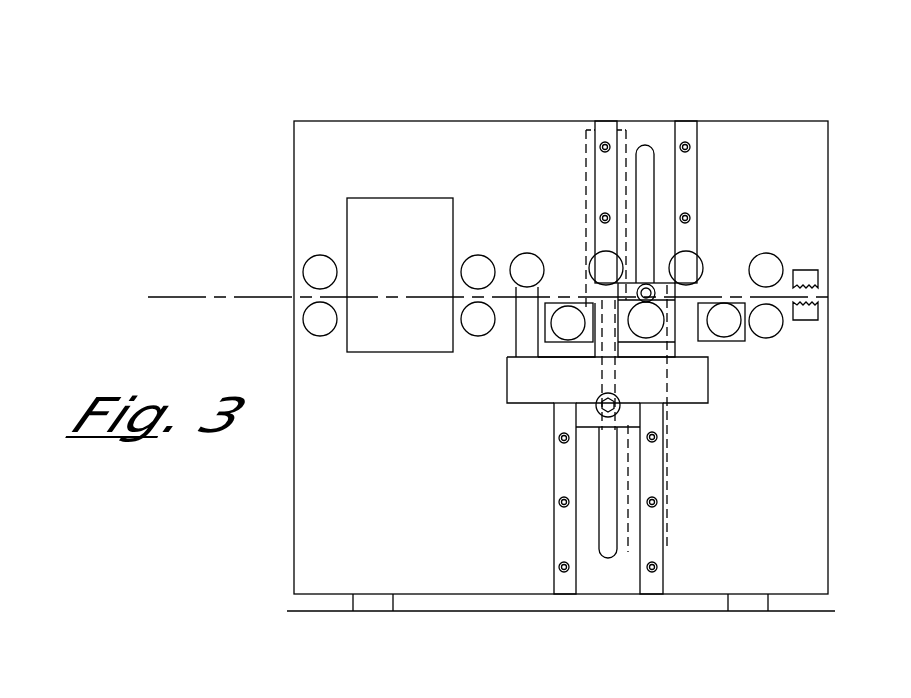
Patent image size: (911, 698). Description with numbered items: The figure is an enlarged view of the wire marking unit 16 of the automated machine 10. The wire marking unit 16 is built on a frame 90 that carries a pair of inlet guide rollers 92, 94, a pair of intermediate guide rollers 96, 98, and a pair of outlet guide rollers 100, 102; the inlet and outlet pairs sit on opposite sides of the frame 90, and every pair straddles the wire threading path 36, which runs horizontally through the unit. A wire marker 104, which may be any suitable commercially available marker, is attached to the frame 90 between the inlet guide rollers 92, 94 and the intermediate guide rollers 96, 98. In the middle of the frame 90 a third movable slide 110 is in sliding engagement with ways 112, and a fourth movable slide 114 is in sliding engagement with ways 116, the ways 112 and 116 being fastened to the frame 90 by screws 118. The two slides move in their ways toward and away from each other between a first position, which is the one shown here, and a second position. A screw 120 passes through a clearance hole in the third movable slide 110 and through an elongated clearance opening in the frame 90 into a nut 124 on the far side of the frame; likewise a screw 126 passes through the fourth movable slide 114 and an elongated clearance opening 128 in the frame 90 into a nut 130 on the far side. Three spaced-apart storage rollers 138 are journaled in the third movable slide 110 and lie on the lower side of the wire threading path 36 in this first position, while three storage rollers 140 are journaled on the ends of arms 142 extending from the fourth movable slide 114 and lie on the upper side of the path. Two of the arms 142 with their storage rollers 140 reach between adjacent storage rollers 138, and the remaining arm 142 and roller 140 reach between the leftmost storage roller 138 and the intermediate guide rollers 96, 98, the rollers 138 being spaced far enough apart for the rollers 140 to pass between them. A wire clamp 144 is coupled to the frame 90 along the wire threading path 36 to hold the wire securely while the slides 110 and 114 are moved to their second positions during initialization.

The automated machine 10 is at (561, 100).
The wire marking unit 16 is at (393, 110).
The wire threading path 36 is at (233, 296).
The frame 90 is at (507, 120).
The inlet guide roller 92 is at (323, 256).
The inlet guide roller 94 is at (320, 332).
The intermediate guide roller 96 is at (480, 257).
The intermediate guide roller 98 is at (482, 333).
The outlet guide roller 100 is at (778, 262).
The outlet guide roller 102 is at (773, 327).
The wire marker 104 is at (385, 198).
The third movable slide 110 is at (659, 280).
The ways 112 is at (603, 130).
The fourth movable slide 114 is at (705, 388).
The ways 116 is at (557, 535).
The screws 118 is at (687, 142).
The screw 120 is at (685, 150).
The nut 124 is at (647, 280).
The screw 126 is at (526, 438).
The elongated clearance opening 128 is at (617, 523).
The nut 130 is at (597, 405).
The storage rollers 138 is at (567, 305).
The storage rollers 140 is at (592, 265).
The arms 142 is at (688, 345).
The wire clamp 144 is at (818, 303).